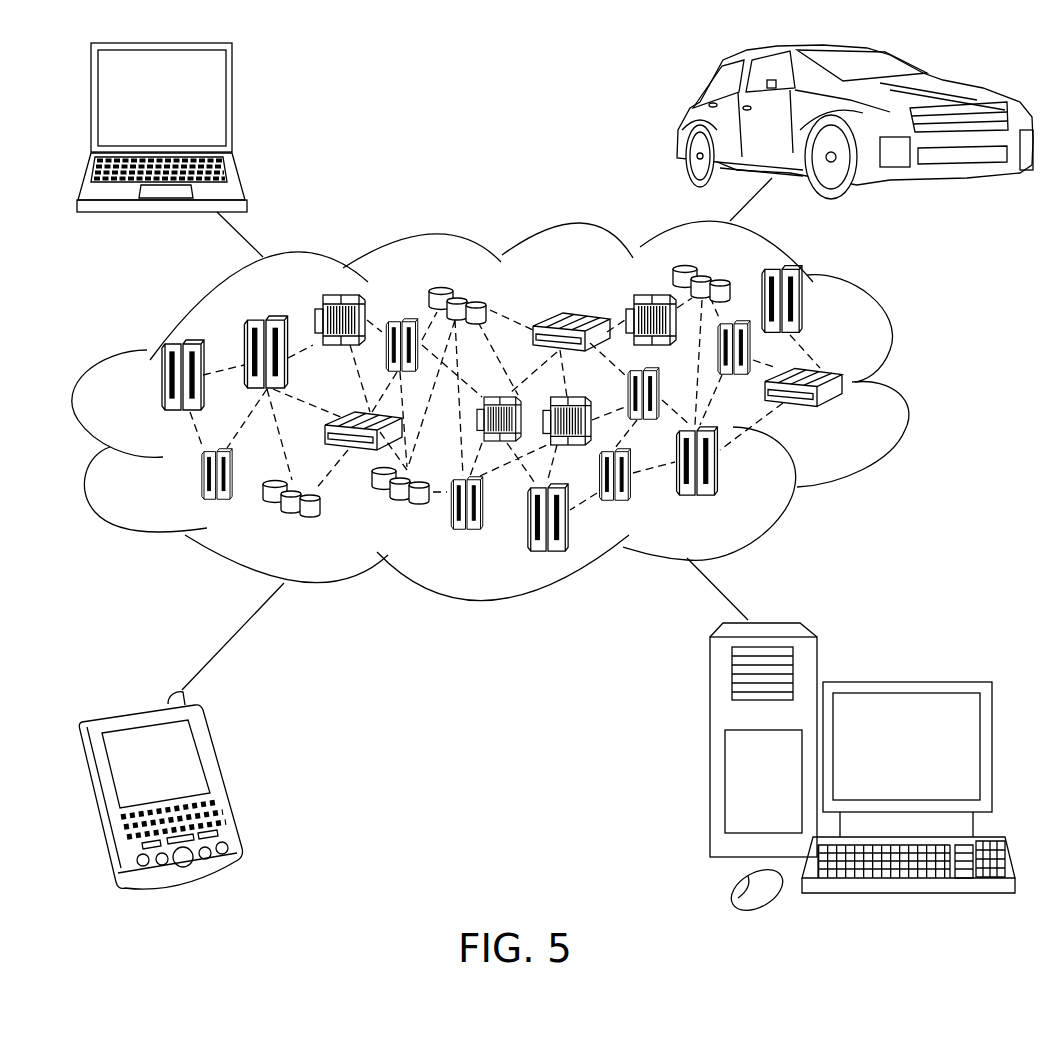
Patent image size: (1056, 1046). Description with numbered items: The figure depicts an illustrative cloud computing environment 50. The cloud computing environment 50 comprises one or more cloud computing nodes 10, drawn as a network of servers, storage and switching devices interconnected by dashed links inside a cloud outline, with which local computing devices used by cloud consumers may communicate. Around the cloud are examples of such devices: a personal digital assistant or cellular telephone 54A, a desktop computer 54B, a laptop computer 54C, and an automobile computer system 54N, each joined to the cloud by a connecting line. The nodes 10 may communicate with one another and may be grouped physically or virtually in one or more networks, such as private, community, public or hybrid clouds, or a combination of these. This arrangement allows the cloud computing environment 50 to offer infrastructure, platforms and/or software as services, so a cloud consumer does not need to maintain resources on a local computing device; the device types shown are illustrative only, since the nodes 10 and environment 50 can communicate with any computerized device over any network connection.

The cloud computing node 10 is at (850, 418).
The cloud computing environment 50 is at (905, 387).
The personal digital assistant or cellular telephone 54A is at (223, 775).
The desktop computer 54B is at (903, 681).
The laptop computer 54C is at (232, 107).
The automobile computer system 54N is at (678, 120).